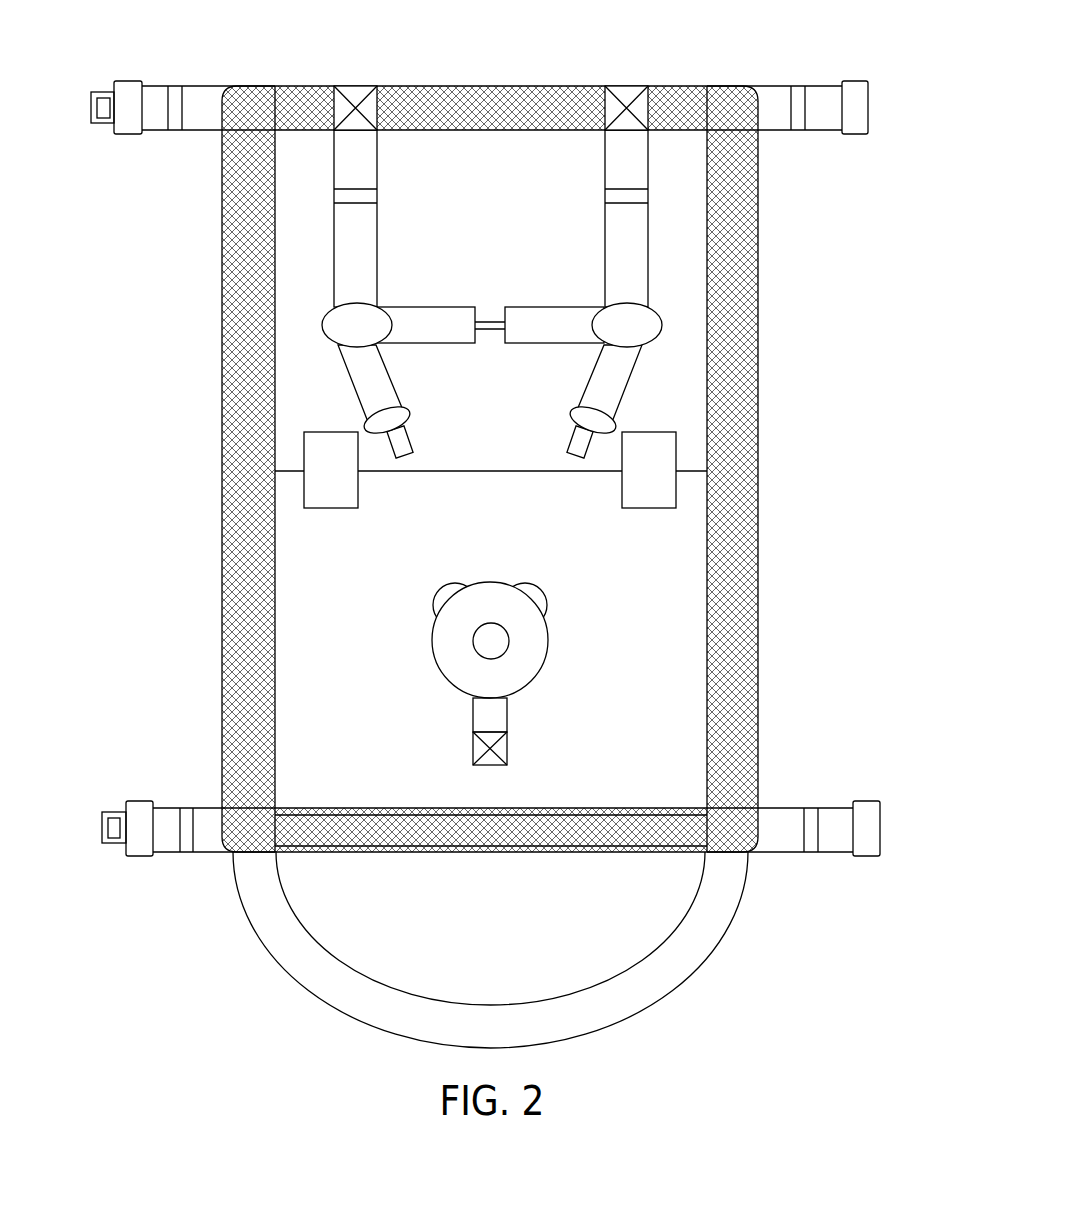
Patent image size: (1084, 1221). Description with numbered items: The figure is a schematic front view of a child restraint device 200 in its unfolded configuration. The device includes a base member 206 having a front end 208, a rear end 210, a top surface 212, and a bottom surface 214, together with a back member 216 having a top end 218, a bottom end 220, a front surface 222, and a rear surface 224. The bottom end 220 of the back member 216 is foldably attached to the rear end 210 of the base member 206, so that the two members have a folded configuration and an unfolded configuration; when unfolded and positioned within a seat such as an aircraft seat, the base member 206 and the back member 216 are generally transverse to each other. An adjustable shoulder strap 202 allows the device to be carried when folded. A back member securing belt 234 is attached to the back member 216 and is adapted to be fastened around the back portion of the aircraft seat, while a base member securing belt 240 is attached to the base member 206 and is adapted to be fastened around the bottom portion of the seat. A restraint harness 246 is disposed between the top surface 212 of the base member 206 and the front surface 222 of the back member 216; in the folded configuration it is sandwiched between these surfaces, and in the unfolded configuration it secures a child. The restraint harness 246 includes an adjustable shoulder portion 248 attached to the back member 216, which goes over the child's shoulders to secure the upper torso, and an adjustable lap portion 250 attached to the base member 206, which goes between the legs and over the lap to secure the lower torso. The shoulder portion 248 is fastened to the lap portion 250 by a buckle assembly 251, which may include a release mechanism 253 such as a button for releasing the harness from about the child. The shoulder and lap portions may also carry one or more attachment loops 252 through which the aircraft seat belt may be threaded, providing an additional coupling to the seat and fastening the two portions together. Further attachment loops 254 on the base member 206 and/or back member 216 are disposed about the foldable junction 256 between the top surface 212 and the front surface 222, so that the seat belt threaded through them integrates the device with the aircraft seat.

The child restraint device 200 is at (485, 524).
The adjustable shoulder strap 202 is at (612, 958).
The base member 206 is at (783, 618).
The front end 208 is at (455, 877).
The rear end 210 is at (199, 492).
The top surface 212 is at (588, 714).
The bottom surface 214 is at (215, 669).
The back member 216 is at (783, 207).
The top end 218 is at (490, 61).
The bottom end 220 is at (199, 445).
The front surface 222 is at (467, 176).
The rear surface 224 is at (215, 216).
The back member securing belt 234 is at (780, 86).
The base member securing belt 240 is at (780, 855).
The restraint harness 246 is at (478, 663).
The adjustable shoulder portion 248 is at (492, 276).
The adjustable lap portion 250 is at (524, 663).
The buckle assembly 251 is at (411, 440).
The attachment loop 252 is at (406, 450).
The release mechanism 253 is at (492, 622).
The attachment loop 254 is at (360, 483).
The foldable junction 256 is at (480, 472).